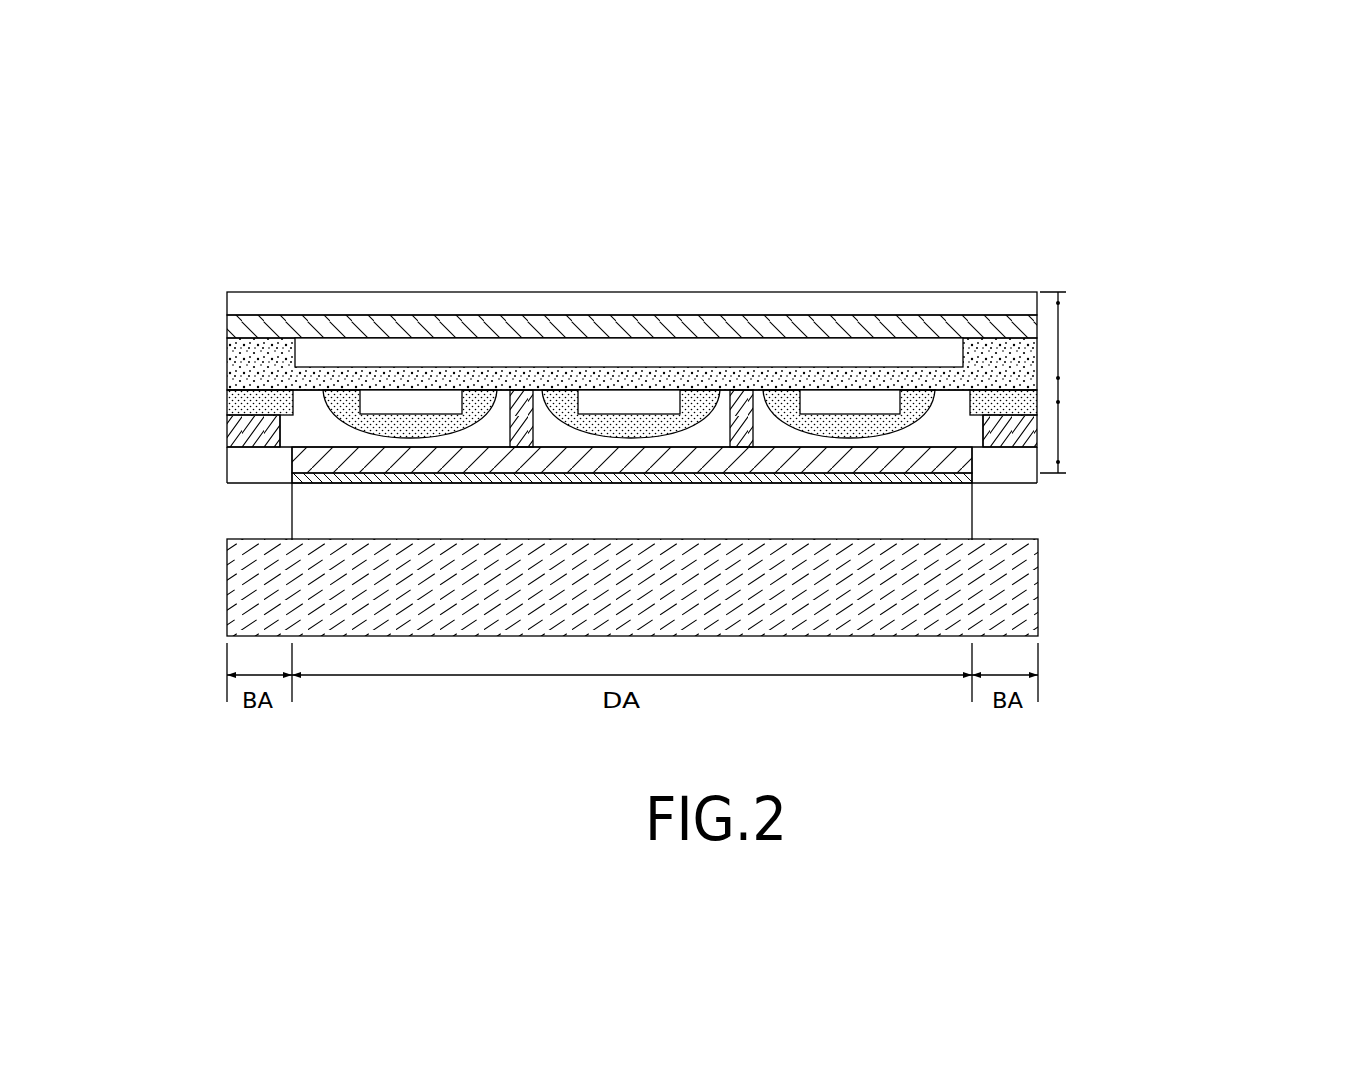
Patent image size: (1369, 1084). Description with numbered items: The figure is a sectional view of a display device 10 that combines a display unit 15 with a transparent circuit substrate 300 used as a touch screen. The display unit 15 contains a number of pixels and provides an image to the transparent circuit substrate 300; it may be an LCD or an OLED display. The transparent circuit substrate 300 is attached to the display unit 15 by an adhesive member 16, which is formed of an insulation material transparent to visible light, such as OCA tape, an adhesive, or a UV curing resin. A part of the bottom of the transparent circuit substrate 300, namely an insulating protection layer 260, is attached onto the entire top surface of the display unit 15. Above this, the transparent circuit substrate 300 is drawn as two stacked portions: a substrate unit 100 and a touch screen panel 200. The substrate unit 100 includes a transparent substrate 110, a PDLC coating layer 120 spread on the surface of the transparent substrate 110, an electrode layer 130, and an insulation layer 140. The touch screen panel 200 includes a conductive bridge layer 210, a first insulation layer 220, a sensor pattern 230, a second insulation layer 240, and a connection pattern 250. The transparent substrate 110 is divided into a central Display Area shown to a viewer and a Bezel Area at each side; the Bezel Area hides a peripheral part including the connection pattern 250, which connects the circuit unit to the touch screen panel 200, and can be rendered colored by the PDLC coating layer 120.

The display device 10 is at (84, 180).
The display unit 15 is at (1038, 583).
The adhesive member 16 is at (940, 511).
The substrate unit 100 is at (1120, 337).
The transparent substrate 110 is at (236, 302).
The PDLC coating layer 120 is at (228, 333).
The electrode layer 130 is at (367, 357).
The insulation layer 140 is at (236, 365).
The touch screen panel 200 is at (1120, 432).
The conductive bridge layer 210 is at (410, 403).
The first insulation layer 220 is at (228, 405).
The sensor pattern 230 is at (322, 428).
The second insulation layer 240 is at (237, 428).
The connection pattern 250 is at (240, 455).
The insulating protection layer 260 is at (340, 478).
The transparent circuit substrate 300 is at (1255, 379).